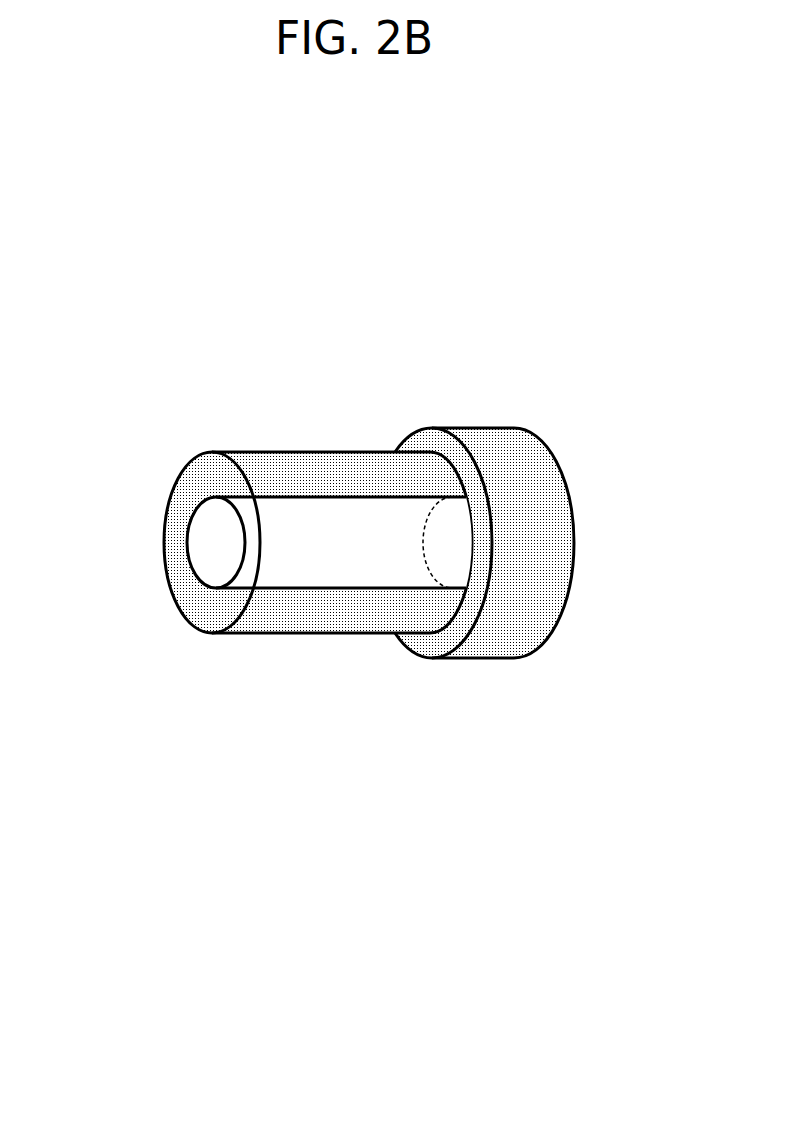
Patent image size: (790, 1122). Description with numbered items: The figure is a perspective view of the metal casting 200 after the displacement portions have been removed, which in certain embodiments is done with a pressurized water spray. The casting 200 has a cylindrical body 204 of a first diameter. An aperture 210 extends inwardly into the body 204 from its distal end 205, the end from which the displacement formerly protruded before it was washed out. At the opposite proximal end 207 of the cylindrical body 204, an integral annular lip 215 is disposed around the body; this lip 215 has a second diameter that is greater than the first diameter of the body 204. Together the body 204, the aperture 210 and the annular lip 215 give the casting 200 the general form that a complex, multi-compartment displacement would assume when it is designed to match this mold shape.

The metal casting 200 is at (372, 629).
The body 204 is at (303, 634).
The distal end 205 is at (193, 601).
The proximal end 207 is at (425, 660).
The aperture 210 is at (341, 497).
The annular lip 215 is at (503, 457).